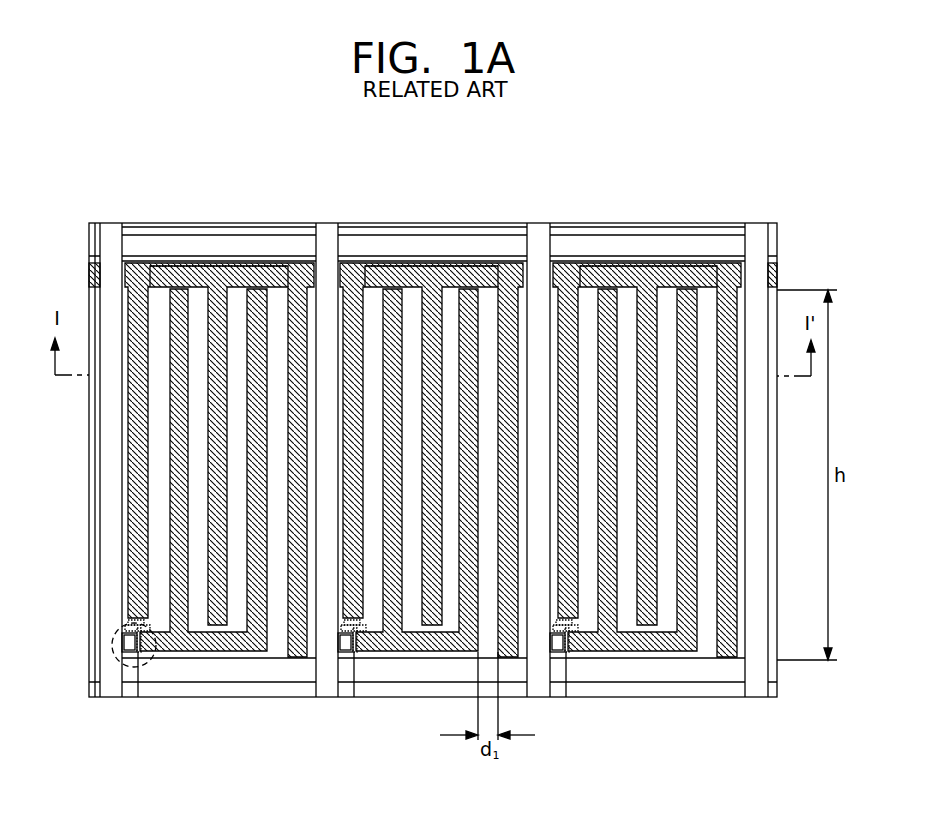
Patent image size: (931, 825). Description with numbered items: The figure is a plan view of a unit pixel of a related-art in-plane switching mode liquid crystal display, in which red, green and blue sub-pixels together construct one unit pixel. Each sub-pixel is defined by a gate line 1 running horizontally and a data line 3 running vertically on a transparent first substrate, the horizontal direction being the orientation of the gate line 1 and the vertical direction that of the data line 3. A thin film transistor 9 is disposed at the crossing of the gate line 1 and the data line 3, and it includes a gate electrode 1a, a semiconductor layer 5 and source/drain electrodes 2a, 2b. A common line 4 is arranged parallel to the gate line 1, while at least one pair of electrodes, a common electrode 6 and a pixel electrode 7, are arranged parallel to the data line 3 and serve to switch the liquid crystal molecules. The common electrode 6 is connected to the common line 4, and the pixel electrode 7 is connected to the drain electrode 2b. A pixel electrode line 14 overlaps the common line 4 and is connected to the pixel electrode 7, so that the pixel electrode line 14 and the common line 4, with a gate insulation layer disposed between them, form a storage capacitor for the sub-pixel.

The gate line 1 is at (250, 677).
The gate electrode 1a is at (123, 622).
The source electrode 2a is at (126, 640).
The drain electrode 2b is at (148, 648).
The data line 3 is at (106, 695).
The common line 4 is at (91, 276).
The semiconductor layer 5 is at (138, 697).
The common electrode 6 is at (217, 288).
The pixel electrode 7 is at (177, 293).
The thin film transistor 9 is at (112, 656).
The pixel electrode line 14 is at (280, 270).